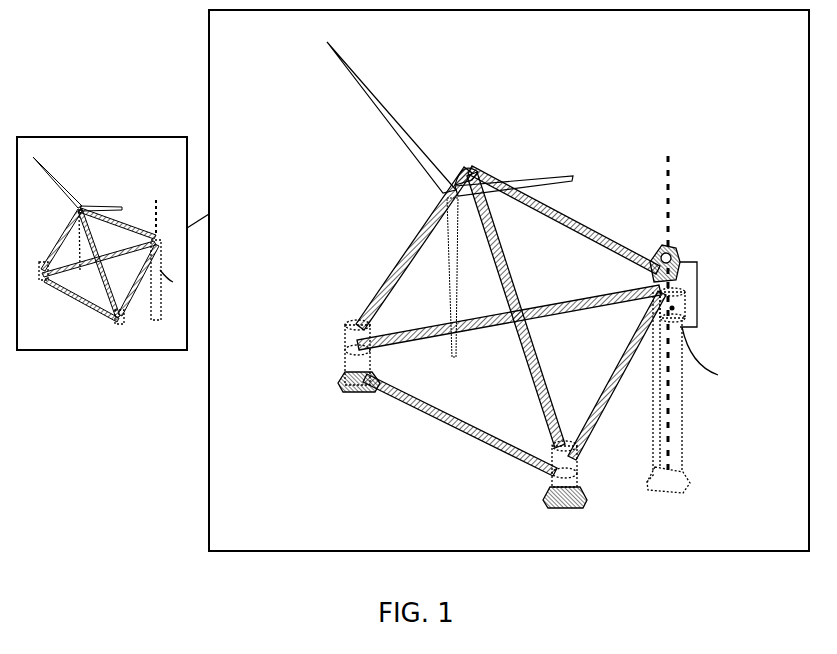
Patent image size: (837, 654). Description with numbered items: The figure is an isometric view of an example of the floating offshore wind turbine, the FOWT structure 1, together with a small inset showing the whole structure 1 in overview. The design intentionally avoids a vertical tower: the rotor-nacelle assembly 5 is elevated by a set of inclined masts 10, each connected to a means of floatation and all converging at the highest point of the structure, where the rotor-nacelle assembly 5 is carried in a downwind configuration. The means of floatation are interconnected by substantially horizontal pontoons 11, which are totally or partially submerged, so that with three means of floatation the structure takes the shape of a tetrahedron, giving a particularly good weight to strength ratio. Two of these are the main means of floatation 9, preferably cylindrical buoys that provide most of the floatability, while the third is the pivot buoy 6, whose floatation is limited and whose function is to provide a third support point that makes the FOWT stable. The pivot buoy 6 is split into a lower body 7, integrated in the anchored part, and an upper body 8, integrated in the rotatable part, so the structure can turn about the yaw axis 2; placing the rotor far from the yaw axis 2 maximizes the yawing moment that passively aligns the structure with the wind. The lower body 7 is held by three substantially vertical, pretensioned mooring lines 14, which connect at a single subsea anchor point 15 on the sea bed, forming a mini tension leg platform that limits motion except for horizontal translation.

The FOWT structure 1 is at (103, 239).
The yaw axis 2 is at (668, 155).
The rotor-nacelle assembly 5 is at (450, 192).
The pivot buoy 6 is at (697, 297).
The lower body of pivot buoy 7 is at (680, 318).
The upper body of pivot buoy 8 is at (672, 275).
The main means of floatation 9 is at (357, 342).
The inclined mast 10 is at (420, 253).
The pontoon 11 is at (467, 427).
The mooring line 14 is at (684, 418).
The subsea anchor point 15 is at (668, 478).